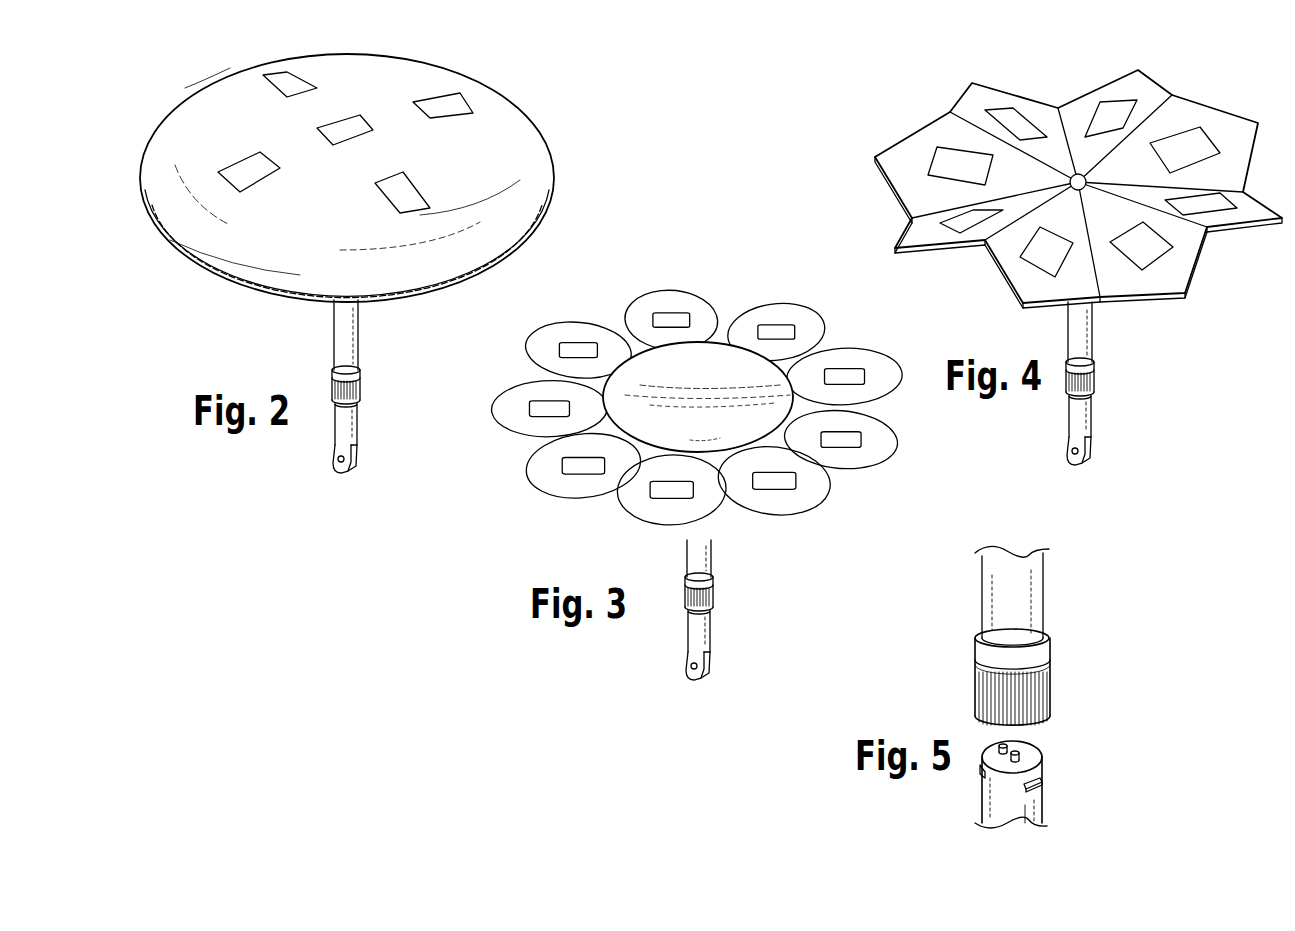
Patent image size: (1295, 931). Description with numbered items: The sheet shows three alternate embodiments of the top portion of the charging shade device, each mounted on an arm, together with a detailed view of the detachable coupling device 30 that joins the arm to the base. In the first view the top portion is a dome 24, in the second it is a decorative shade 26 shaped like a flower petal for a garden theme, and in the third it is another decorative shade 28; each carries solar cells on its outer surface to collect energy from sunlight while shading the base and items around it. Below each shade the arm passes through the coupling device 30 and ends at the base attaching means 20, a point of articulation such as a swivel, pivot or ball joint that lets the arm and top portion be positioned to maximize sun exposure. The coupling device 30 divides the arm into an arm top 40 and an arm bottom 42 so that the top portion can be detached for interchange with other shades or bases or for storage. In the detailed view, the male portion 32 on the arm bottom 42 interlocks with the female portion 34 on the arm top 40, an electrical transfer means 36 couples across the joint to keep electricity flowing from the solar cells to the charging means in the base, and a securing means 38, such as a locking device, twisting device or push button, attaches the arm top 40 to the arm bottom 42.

In FIG. 2, the base attaching means 20 is at (337, 460).
In FIG. 2, the dome 24 is at (215, 70).
In FIG. 3, the decorative shade 26 is at (772, 290).
In FIG. 4, the decorative shade 28 is at (936, 96).
In FIG. 2, the coupling device 30 is at (360, 388).
In FIG. 3, the coupling device 30 is at (713, 594).
In FIG. 4, the coupling device 30 is at (1094, 385).
In FIG. 5, the coupling device 30 is at (1108, 655).
In FIG. 5, the male portion 32 is at (1024, 809).
In FIG. 5, the female portion 34 is at (990, 675).
In FIG. 5, the electrical transfer means 36 is at (1010, 751).
In FIG. 5, the securing means 38 is at (1042, 788).
In FIG. 5, the arm top 40 is at (1003, 603).
In FIG. 5, the arm bottom 42 is at (1001, 803).